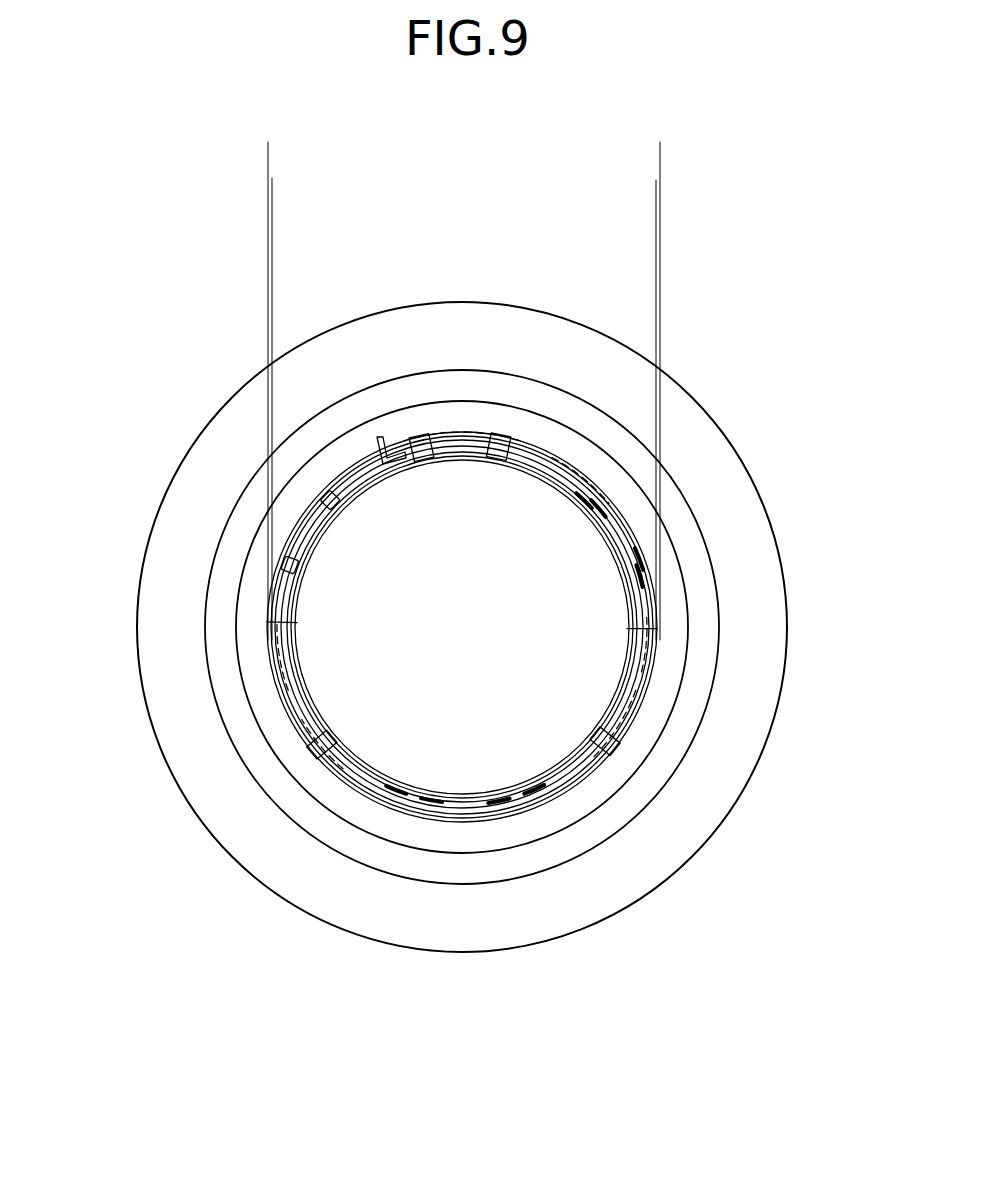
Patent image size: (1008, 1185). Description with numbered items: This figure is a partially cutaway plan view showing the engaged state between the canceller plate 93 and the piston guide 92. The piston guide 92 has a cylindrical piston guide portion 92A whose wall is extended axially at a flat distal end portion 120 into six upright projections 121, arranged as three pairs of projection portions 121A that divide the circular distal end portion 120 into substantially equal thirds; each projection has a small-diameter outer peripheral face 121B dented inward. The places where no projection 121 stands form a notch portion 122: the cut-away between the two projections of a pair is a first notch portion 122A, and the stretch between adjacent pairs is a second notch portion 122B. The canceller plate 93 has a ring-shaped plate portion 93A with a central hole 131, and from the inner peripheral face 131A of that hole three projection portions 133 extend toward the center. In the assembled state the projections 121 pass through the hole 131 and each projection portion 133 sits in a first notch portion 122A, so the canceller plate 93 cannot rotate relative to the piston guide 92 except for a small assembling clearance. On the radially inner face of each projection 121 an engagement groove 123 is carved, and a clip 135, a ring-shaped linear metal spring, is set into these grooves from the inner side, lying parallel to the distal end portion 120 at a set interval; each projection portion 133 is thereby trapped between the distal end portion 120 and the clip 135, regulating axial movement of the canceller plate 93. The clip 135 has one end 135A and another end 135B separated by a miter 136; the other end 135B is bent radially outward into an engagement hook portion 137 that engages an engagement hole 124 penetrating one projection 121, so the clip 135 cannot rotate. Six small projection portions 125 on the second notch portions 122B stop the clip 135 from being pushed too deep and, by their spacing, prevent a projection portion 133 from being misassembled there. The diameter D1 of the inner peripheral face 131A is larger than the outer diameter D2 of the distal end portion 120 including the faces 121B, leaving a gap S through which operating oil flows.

The piston guide 92 is at (634, 519).
The piston guide portion 92A is at (640, 540).
The canceller plate 93 is at (568, 303).
The plate portion 93A is at (733, 525).
The distal end portion 120 is at (655, 578).
The projection 121 is at (448, 445).
The projection portion 121A is at (507, 435).
The outer peripheral face 121B is at (655, 610).
The notch portion 122 is at (600, 484).
The first notch portion 122A is at (497, 455).
The second notch portion 122B is at (308, 512).
The engagement groove 123 is at (420, 440).
The engagement hole 124 is at (395, 440).
The projection portion 125 is at (333, 503).
The hole 131 is at (410, 765).
The inner peripheral face 131A is at (345, 466).
The projection portion 133 is at (464, 455).
The clip 135 is at (540, 805).
The one end 135A is at (285, 578).
The other end 135B is at (380, 455).
The miter 136 is at (293, 517).
The engagement hook portion 137 is at (397, 462).
The gap S is at (312, 500).
The diameter of the inner peripheral face D1 is at (660, 157).
The outer diameter of the distal end portion D2 is at (656, 208).